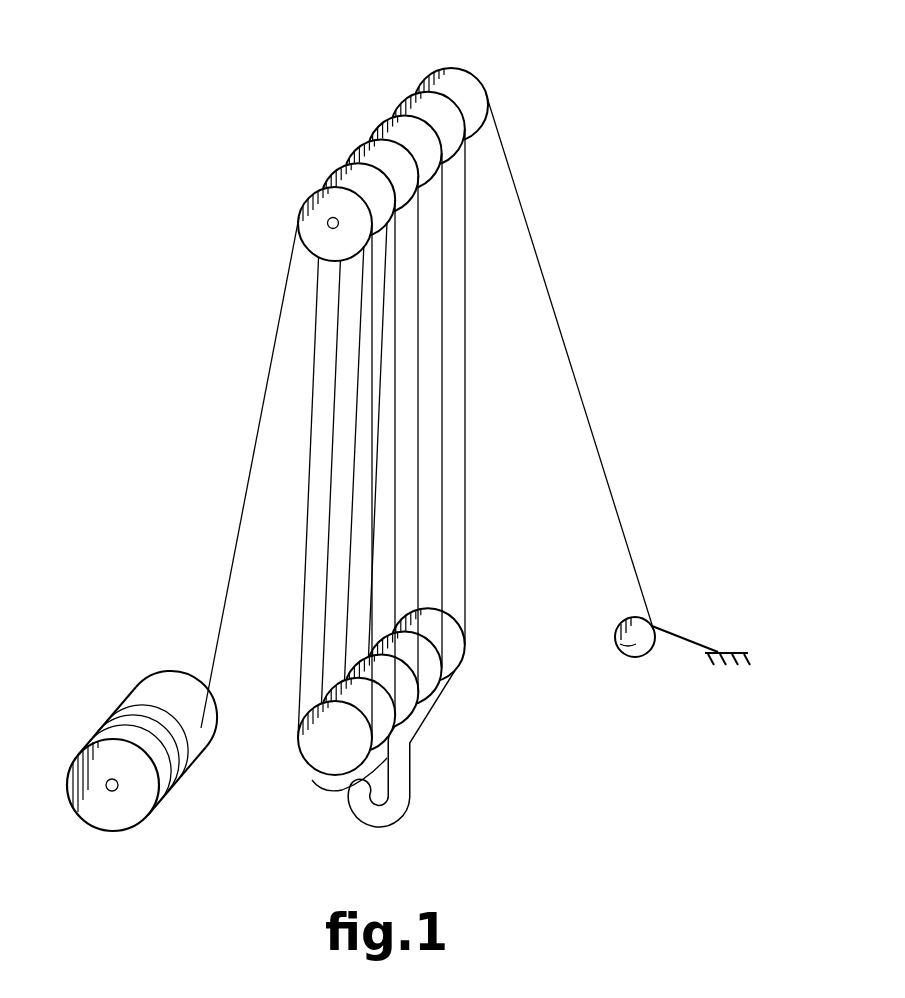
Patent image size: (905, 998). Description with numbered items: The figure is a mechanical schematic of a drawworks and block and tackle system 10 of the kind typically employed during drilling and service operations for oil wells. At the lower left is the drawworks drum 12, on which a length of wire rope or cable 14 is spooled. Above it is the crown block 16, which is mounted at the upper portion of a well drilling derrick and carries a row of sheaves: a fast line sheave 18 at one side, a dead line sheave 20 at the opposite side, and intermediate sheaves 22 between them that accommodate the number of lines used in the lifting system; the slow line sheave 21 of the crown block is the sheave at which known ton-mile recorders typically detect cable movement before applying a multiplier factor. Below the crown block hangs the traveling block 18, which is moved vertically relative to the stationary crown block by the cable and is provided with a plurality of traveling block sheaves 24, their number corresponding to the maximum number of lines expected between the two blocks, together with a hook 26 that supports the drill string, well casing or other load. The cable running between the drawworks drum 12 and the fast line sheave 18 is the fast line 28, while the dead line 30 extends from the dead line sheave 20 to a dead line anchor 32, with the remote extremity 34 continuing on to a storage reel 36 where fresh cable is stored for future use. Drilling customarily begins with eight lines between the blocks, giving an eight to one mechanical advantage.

The drawworks and block and tackle system 10 is at (198, 452).
The drawworks drum 12 is at (103, 833).
The wire rope or cable 14 is at (131, 776).
The crown block 16 is at (372, 130).
The traveling block / fast line sheave 18 is at (330, 213).
The dead line sheave 20 is at (457, 87).
The slow line sheave 21 is at (432, 107).
The intermediate sheaves 22 is at (357, 183).
The traveling block sheaves 24 is at (358, 694).
The hook 26 is at (412, 787).
The fast line 28 is at (223, 615).
The dead line 30 is at (573, 380).
The dead line anchor 32 is at (616, 646).
The remote extremity 34 is at (673, 630).
The storage reel 36 is at (738, 652).